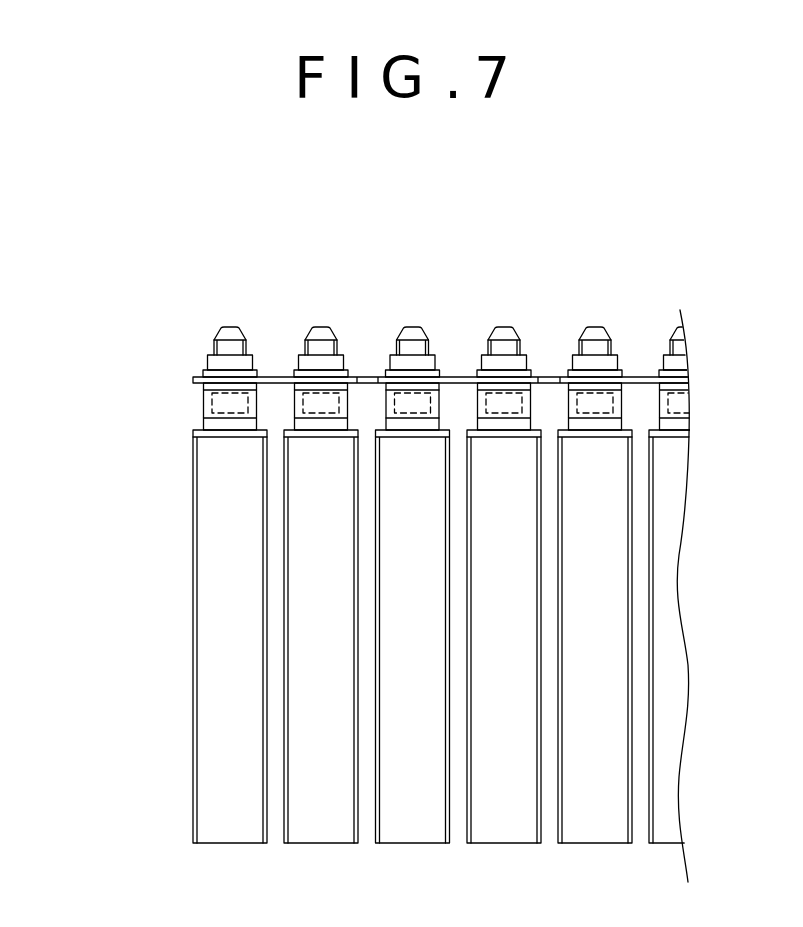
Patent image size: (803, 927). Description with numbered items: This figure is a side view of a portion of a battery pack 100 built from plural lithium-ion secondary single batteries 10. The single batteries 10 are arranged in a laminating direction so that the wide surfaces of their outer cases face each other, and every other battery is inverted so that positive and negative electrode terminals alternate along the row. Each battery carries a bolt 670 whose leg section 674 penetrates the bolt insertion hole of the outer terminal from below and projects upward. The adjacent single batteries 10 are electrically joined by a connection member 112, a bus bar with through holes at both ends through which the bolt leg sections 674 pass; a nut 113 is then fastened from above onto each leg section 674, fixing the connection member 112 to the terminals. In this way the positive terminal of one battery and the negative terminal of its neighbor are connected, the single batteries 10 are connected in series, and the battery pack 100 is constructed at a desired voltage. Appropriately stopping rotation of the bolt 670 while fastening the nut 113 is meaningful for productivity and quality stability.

The battery pack 100 is at (158, 652).
The lithium-ion secondary battery 10 is at (228, 832).
The connection member 112 is at (270, 377).
The nut 113 is at (208, 357).
The bolt 670 is at (165, 309).
The leg section 674 is at (216, 334).